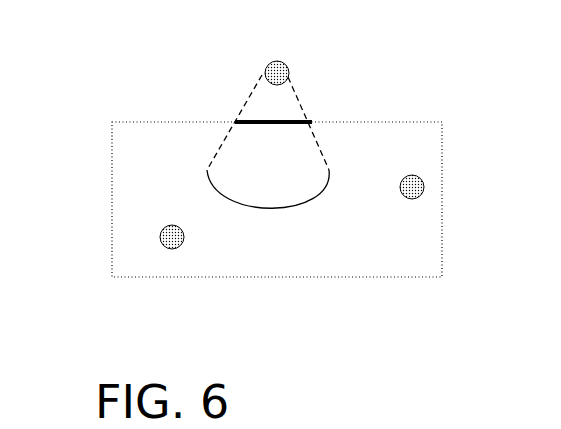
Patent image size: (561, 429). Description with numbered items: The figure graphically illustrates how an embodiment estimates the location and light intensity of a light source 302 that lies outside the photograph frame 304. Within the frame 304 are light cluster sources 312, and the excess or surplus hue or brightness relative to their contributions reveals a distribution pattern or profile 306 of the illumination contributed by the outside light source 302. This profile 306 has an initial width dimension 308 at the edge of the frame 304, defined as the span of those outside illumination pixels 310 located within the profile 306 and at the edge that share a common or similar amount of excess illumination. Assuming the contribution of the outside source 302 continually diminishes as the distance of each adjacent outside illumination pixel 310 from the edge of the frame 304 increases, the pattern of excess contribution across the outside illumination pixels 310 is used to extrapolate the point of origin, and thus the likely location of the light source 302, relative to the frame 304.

The light source 302 is at (239, 54).
The photograph frame 304 is at (277, 231).
The distribution pattern or profile 306 is at (231, 140).
The initial width dimension 308 is at (338, 89).
The outside illumination pixels 310 is at (357, 205).
The light cluster sources 312 is at (284, 189).